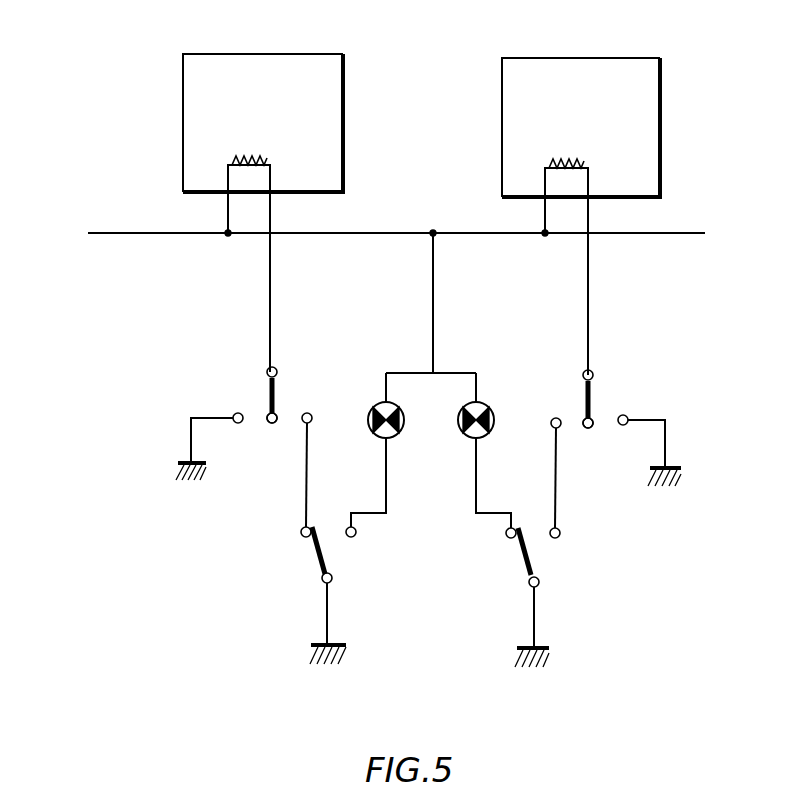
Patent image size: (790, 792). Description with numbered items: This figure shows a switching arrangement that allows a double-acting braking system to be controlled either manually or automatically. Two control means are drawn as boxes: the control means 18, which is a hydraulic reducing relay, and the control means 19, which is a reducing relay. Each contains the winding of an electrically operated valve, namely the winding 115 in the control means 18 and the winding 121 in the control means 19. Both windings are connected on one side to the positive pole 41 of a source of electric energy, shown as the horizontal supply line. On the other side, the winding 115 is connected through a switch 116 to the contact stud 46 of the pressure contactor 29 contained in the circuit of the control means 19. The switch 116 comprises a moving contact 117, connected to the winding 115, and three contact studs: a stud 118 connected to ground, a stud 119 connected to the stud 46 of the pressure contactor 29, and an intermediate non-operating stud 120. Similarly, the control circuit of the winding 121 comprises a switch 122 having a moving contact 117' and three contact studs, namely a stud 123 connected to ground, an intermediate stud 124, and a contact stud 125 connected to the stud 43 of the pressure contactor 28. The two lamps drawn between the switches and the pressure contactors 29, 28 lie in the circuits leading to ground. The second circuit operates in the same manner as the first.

The control means 18 is at (325, 88).
The control means 19 is at (515, 87).
The winding 115 is at (253, 158).
The winding 121 is at (580, 165).
The positive pole 41 is at (380, 228).
The switch 116 is at (270, 387).
The moving contact 117 is at (307, 382).
The contact stud 118 is at (239, 424).
The contact stud 119 is at (312, 418).
The intermediate non-operating stud 120 is at (272, 423).
The pressure contactor 29 is at (302, 565).
The contact stud 46 is at (300, 535).
The contact stud 125 is at (558, 418).
The moving contact 117' is at (624, 383).
The switch 122 is at (637, 388).
The contact stud 123 is at (628, 416).
The contact 124 is at (588, 428).
The pressure contactor 28 is at (558, 573).
The contact stud 43 is at (561, 532).